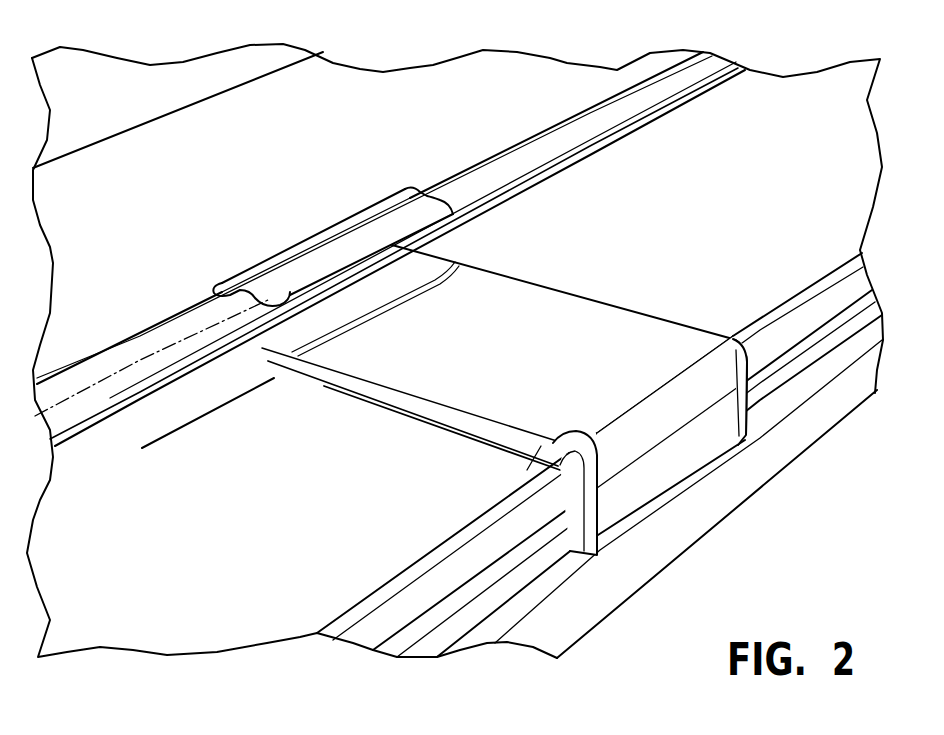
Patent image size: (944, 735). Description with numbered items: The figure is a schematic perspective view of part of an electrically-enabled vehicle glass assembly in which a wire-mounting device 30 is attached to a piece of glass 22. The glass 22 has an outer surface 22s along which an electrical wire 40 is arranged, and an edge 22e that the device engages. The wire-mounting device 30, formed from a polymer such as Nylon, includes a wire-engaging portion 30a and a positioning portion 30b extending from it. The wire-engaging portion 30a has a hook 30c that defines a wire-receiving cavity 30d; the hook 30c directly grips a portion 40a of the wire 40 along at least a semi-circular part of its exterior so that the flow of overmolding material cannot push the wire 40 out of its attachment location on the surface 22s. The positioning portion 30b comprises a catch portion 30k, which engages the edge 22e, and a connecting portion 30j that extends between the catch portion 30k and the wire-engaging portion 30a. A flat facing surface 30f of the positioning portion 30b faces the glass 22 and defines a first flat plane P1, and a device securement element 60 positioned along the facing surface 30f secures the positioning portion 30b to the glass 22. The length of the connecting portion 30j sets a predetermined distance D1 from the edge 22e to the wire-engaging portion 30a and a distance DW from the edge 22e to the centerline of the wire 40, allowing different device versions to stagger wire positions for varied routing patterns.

The piece of glass 22 is at (810, 164).
The outer surface 22s is at (740, 122).
The edge 22e is at (768, 348).
The wire 40 is at (616, 117).
The portion of the wire 40a is at (378, 270).
The wire-mounting device 30 is at (410, 426).
The wire-engaging portion 30a is at (270, 244).
The positioning portion 30b is at (515, 412).
The hook 30c is at (343, 222).
The wire-receiving cavity 30d is at (222, 288).
The facing surface 30f is at (541, 447).
The connecting portion 30j is at (617, 322).
The catch portion 30k is at (690, 453).
The device securement element 60 is at (468, 430).
The predetermined distance D1 is at (480, 518).
The predetermined distance DW is at (398, 573).
The first flat plane P1 is at (588, 437).